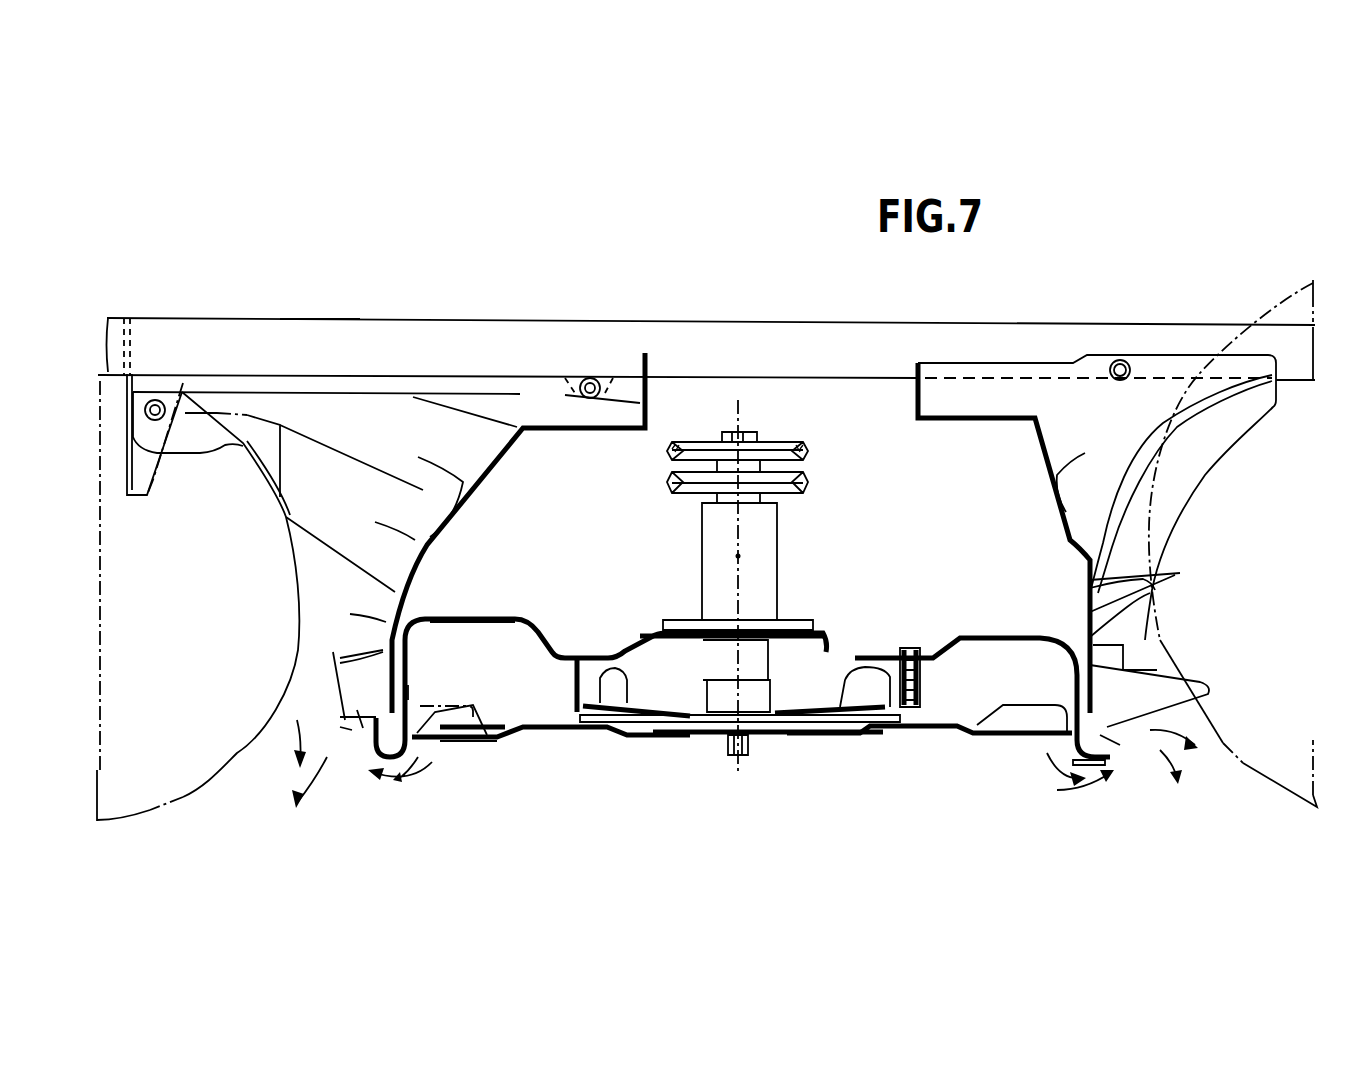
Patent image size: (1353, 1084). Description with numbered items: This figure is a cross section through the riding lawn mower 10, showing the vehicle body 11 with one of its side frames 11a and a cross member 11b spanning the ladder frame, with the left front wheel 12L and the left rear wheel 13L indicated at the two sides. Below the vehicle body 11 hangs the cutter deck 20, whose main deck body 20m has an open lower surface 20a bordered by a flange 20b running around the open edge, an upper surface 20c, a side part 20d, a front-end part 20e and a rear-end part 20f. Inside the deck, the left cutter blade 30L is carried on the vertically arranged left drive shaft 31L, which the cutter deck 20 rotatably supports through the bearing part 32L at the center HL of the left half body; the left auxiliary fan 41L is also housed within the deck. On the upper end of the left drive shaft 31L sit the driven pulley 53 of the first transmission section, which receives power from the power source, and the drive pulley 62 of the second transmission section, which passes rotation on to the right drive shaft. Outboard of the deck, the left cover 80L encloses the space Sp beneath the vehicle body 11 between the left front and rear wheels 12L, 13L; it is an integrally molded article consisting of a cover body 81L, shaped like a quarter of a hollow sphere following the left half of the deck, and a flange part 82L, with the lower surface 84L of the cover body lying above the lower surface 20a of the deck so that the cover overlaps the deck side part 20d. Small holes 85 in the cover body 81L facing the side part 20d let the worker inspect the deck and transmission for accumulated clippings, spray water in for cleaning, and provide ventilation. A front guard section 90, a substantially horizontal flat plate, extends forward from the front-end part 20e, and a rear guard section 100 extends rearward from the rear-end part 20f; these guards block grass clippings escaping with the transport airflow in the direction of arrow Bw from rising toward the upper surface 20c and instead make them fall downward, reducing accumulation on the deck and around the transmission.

The riding lawn mower 10 is at (169, 198).
The vehicle body 11 is at (228, 312).
The side frame 11a is at (316, 316).
The cross member 11b is at (145, 500).
The left front wheel 12L is at (150, 820).
The left rear wheel 13L is at (1280, 806).
The cutter deck 20 is at (972, 628).
The lower surface 20a is at (488, 756).
The flange 20b is at (445, 716).
The upper surface 20c is at (486, 620).
The side part 20d is at (412, 686).
The front-end part 20e is at (372, 758).
The rear-end part 20f is at (1118, 762).
The main deck body 20m is at (543, 603).
The left cutter blade 30L is at (555, 744).
The left drive shaft 31L is at (720, 468).
The bearing part 32L is at (768, 562).
The left auxiliary fan 41L is at (866, 684).
The driven pulley 53 is at (778, 448).
The drive pulley 62 is at (778, 492).
The left cover 80L is at (560, 198).
The cover body 81L is at (490, 440).
The flange part 82L is at (1146, 398).
The lower surface 84L is at (352, 718).
The small hole 85 is at (770, 546).
The front guard section 90 is at (333, 655).
The rear guard section 100 is at (1197, 685).
The center of left half body HL is at (738, 556).
The space Sp is at (285, 735).
The arrow Bw is at (783, 775).